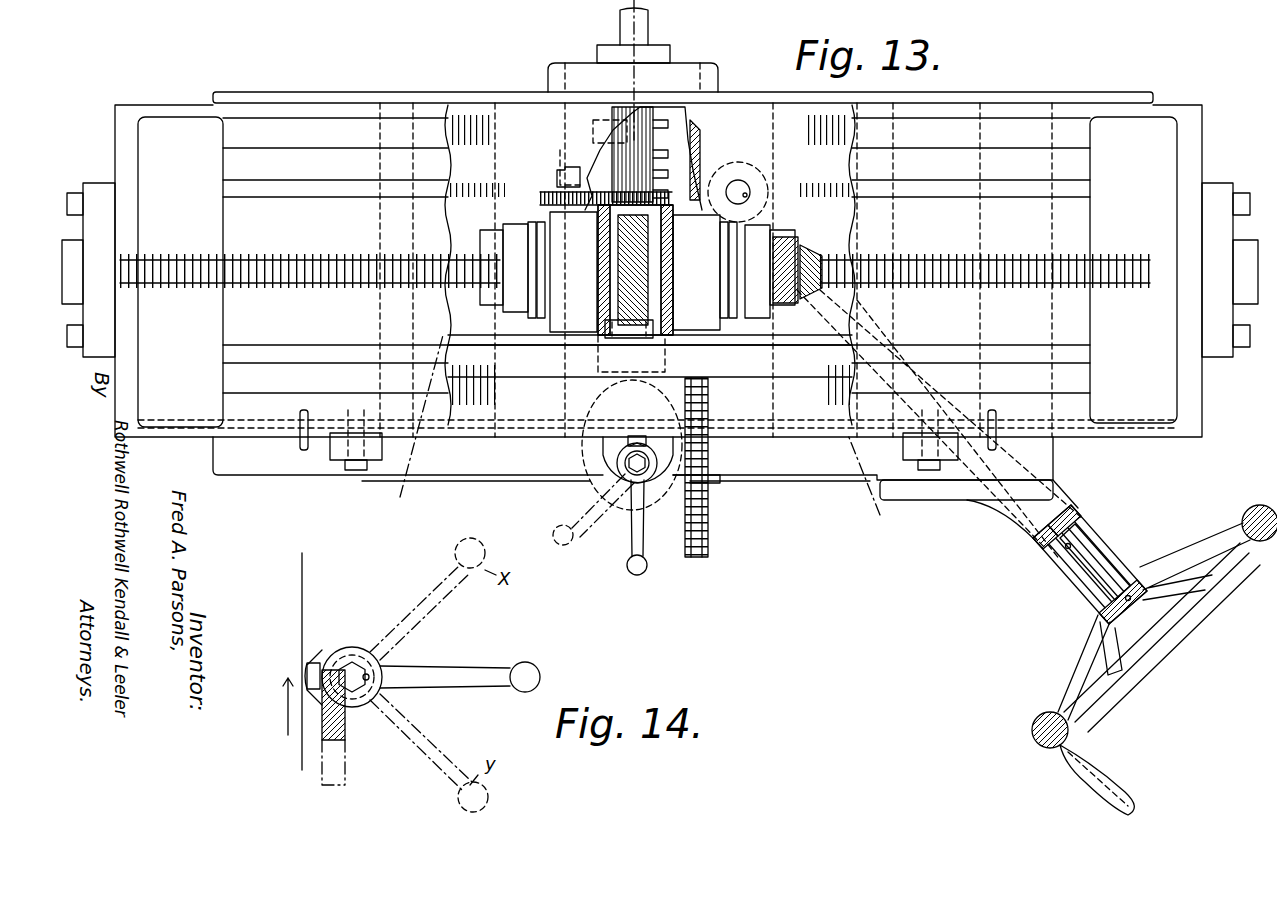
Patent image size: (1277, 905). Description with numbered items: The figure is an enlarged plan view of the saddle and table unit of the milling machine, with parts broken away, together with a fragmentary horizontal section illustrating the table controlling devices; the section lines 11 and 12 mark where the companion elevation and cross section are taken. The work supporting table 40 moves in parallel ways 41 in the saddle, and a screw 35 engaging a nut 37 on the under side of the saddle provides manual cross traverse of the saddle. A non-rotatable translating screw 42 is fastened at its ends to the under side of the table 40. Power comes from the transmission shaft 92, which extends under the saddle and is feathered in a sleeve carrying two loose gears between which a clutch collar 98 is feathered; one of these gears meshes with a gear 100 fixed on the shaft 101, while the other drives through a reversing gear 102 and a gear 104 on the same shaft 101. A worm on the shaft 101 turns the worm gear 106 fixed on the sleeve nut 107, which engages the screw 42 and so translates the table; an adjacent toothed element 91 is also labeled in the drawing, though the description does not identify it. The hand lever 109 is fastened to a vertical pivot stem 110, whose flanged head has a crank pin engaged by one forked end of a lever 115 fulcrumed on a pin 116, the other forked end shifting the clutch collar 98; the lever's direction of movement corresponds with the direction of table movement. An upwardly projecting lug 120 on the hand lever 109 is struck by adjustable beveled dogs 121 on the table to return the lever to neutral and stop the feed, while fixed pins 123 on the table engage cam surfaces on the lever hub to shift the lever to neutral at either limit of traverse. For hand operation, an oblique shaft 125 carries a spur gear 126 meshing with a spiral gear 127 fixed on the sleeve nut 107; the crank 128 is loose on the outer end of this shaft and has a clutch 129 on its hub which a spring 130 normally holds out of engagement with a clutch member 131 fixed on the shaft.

In FIG. 13, the section line 11— 11 is at (370, 500).
In FIG. 13, the section line 12— 12 is at (634, 6).
In FIG. 13, the screw 35 is at (706, 552).
In FIG. 13, the nut 37 is at (718, 483).
In FIG. 14, the work supporting table 40 is at (302, 586).
In FIG. 13, the ways 41 is at (800, 375).
In FIG. 13, the translating screw 42 is at (460, 254).
In FIG. 13, the worm wheel 91 is at (660, 200).
In FIG. 13, the shaft 92 is at (650, 31).
In FIG. 13, the clutch collar 98 is at (670, 150).
In FIG. 13, the gear 100 is at (690, 115).
In FIG. 13, the shaft 101 is at (556, 222).
In FIG. 13, the reversing gear 102 is at (580, 180).
In FIG. 13, the gear 104 is at (672, 185).
In FIG. 13, the worm gear 106 is at (625, 338).
In FIG. 13, the sleeve nut 107 is at (510, 305).
In FIG. 13, the hand lever 109 is at (627, 565).
In FIG. 14, the hand lever 109 is at (523, 662).
In FIG. 13, the pivot stem 110 is at (616, 470).
In FIG. 14, the pivot stem 110 is at (355, 665).
In FIG. 13, the lever 115 is at (705, 150).
In FIG. 13, the pin 116 is at (752, 198).
In FIG. 13, the lug 120 is at (633, 437).
In FIG. 14, the lug 120 is at (310, 672).
In FIG. 13, the dog 121 is at (342, 448).
In FIG. 14, the dog 121 is at (340, 728).
In FIG. 13, the pin 123 is at (300, 447).
In FIG. 13, the shaft 125 is at (1082, 522).
In FIG. 13, the spur gear 126 is at (822, 248).
In FIG. 13, the spiral gear 127 is at (786, 238).
In FIG. 13, the crank 128 is at (1044, 700).
In FIG. 13, the clutch 129 is at (1122, 542).
In FIG. 13, the spring 130 is at (1080, 592).
In FIG. 13, the clutch member 131 is at (1044, 565).